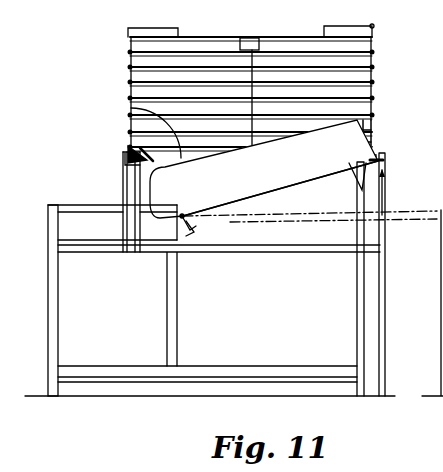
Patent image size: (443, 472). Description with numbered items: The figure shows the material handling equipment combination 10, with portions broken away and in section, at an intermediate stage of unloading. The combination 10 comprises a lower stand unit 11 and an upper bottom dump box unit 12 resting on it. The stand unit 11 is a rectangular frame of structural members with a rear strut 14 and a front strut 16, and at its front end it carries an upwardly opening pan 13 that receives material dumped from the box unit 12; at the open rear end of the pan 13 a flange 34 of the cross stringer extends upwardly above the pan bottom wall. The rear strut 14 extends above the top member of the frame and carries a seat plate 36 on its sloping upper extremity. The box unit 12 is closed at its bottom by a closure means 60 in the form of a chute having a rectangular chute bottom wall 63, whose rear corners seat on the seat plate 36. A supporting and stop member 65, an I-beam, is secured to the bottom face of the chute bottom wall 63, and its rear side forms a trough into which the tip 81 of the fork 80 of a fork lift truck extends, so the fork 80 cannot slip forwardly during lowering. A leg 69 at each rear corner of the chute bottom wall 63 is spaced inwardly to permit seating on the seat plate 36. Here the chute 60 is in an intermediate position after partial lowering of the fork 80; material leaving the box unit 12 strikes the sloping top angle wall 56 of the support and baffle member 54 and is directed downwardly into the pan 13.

The material handling equipment combination 10 is at (61, 387).
The lower stand unit 11 is at (387, 266).
The bottom dump box unit 12 is at (375, 88).
The pan 13 is at (63, 222).
The rear strut 14 is at (97, 185).
The front strut 16 is at (57, 322).
The flange 34 is at (175, 230).
The seat plate 36 is at (360, 193).
The support and baffle member 54 is at (143, 166).
The top angle wall 56 is at (142, 147).
The closure means 60 is at (256, 198).
The chute bottom wall 63 is at (232, 202).
The supporting and stop member 65 is at (192, 234).
The leg 69 is at (356, 178).
The fork 80 is at (280, 214).
The tip 81 is at (185, 218).